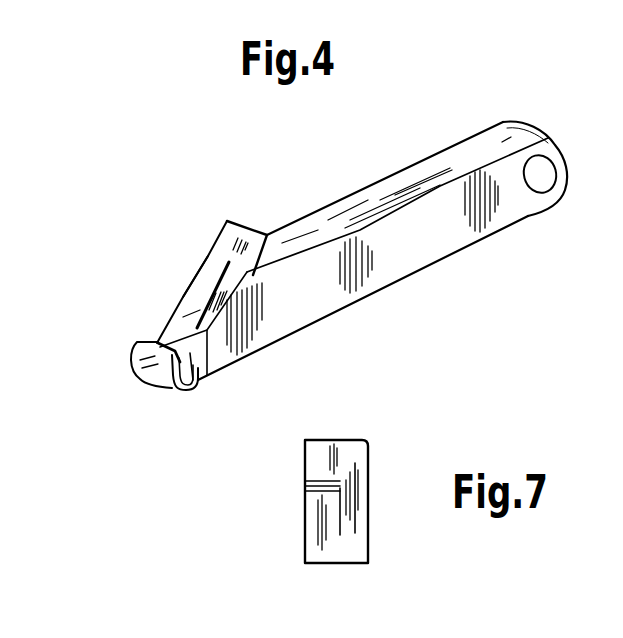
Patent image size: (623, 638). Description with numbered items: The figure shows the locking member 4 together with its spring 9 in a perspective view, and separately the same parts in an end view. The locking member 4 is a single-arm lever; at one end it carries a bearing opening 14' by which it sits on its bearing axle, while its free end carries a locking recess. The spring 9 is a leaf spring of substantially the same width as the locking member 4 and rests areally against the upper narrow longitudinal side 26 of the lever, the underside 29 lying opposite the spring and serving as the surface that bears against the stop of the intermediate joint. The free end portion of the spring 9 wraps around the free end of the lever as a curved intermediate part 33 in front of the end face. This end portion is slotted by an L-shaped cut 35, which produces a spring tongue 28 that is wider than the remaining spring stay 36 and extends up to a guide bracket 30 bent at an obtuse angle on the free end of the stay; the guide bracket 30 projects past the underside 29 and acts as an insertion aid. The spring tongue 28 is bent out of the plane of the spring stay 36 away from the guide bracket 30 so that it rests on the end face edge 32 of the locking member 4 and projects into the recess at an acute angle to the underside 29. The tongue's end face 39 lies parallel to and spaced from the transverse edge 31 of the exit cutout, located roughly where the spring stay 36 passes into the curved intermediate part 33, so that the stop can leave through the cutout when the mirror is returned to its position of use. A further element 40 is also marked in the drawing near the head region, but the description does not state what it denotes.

In FIG. 4, the locking member 4 is at (486, 126).
In FIG. 4, the spring 9 is at (207, 247).
In FIG. 7, the spring 9 is at (375, 493).
In FIG. 4, the bearing opening 14' is at (570, 186).
In FIG. 4, the upper narrow longitudinal side 26 is at (415, 272).
In FIG. 4, the spring tongue 28 is at (220, 306).
In FIG. 7, the spring tongue 28 is at (320, 503).
In FIG. 4, the underside 29 is at (399, 203).
In FIG. 4, the guide bracket 30 is at (245, 237).
In FIG. 7, the guide bracket 30 is at (350, 551).
In FIG. 4, the edge 31 is at (160, 373).
In FIG. 4, the end face edge 32 is at (177, 372).
In FIG. 4, the curved intermediate part 33 is at (147, 357).
In FIG. 4, the L-shaped cut 35 is at (180, 317).
In FIG. 7, the L-shaped cut 35 is at (341, 482).
In FIG. 4, the spring stay 36 is at (180, 292).
In FIG. 7, the spring stay 36 is at (356, 530).
In FIG. 4, the end face 39 is at (206, 376).
In FIG. 4, the head top surface 40 is at (182, 333).